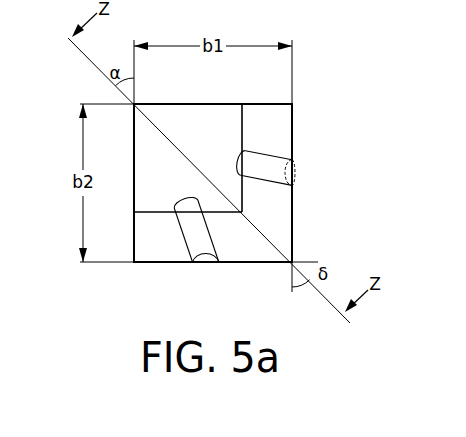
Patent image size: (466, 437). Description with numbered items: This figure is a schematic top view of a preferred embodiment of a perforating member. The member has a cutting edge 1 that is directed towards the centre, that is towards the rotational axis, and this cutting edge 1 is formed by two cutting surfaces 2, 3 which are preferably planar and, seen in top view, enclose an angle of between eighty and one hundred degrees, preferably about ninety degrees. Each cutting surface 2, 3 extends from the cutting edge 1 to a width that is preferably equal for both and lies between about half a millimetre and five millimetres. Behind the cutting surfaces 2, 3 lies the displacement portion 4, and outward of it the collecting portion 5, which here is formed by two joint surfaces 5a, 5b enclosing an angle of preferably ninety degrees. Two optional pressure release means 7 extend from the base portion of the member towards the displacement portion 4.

The cutting edge 1 is at (135, 103).
The cutting surface 2 is at (186, 104).
The cutting surface 3 is at (134, 149).
The displacement portion 4 is at (233, 118).
The collecting portion 5 is at (271, 240).
The joint surface 5a is at (247, 253).
The joint surface 5b is at (283, 198).
The pressure release means 7 is at (272, 155).